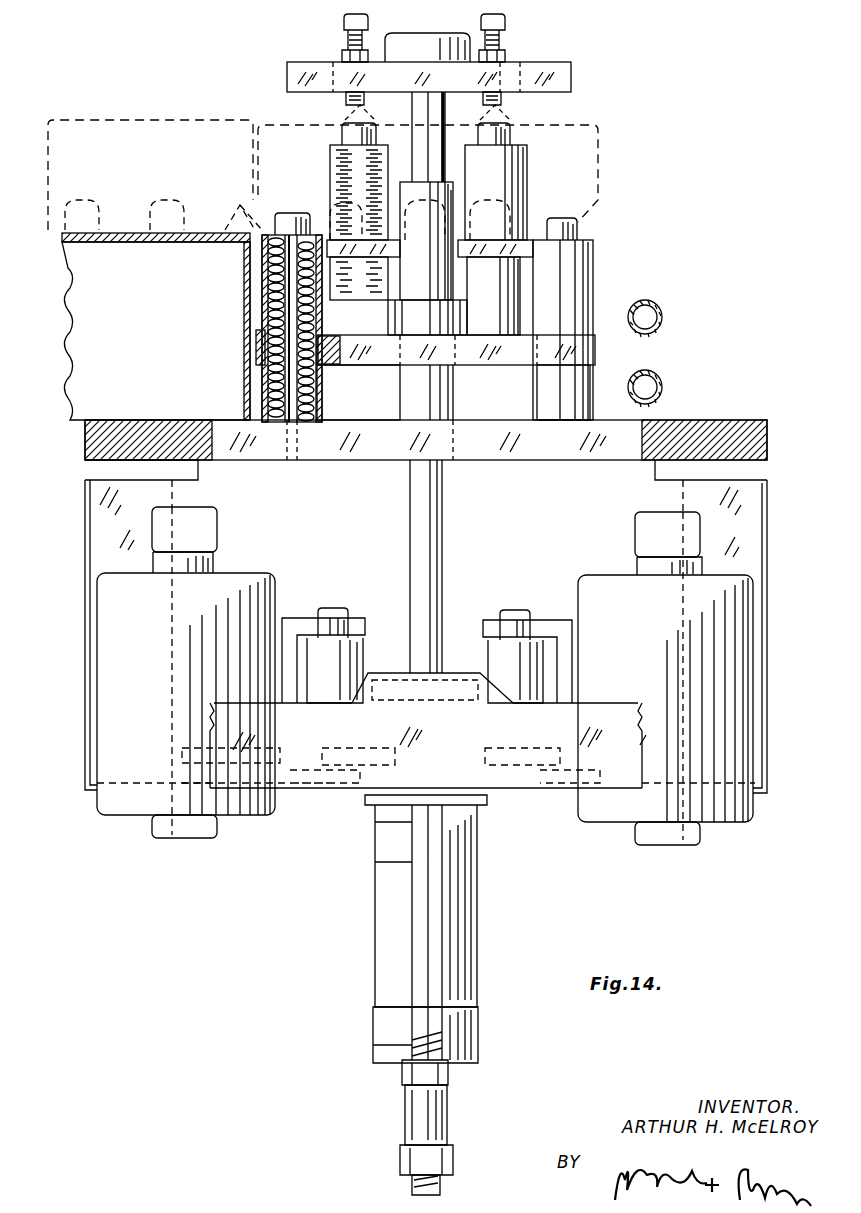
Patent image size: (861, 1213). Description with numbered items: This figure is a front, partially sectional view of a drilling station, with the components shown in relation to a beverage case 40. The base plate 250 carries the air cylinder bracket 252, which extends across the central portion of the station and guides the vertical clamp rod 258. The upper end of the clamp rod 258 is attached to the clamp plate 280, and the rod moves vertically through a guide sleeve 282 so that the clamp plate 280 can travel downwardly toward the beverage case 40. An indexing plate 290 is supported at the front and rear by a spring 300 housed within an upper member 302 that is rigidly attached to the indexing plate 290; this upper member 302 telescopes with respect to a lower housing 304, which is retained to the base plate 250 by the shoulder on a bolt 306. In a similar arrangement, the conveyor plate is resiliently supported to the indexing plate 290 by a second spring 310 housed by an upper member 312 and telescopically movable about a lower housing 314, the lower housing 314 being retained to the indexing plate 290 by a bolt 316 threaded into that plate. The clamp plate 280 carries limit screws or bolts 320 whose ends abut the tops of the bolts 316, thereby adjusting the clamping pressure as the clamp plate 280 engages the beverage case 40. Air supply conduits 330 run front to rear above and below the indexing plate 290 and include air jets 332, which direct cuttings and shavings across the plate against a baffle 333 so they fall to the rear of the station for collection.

The beverage case 40 is at (110, 132).
The base plate 250 is at (767, 440).
The air cylinder bracket 252 is at (755, 511).
The clamp rod 258 is at (442, 512).
The clamp plate 280 is at (571, 82).
The guide sleeve 282 is at (444, 135).
The indexing plate 290 is at (526, 366).
The spring 300 is at (272, 300).
The upper member 302 is at (590, 268).
The lower housing 304 is at (318, 406).
The bolt 306 is at (580, 228).
The spring 310 is at (332, 162).
The upper member 312 is at (396, 162).
The lower housing 314 is at (393, 290).
The bolt 316 is at (358, 178).
The limit screws or bolts 320 is at (340, 36).
The air supply conduits 330 is at (662, 317).
The air jets 332 is at (628, 317).
The baffle 333 is at (75, 400).